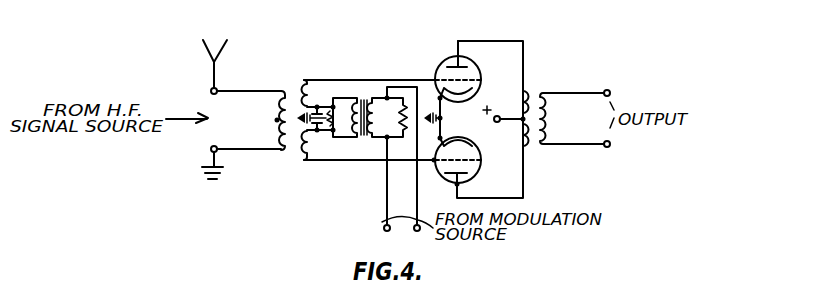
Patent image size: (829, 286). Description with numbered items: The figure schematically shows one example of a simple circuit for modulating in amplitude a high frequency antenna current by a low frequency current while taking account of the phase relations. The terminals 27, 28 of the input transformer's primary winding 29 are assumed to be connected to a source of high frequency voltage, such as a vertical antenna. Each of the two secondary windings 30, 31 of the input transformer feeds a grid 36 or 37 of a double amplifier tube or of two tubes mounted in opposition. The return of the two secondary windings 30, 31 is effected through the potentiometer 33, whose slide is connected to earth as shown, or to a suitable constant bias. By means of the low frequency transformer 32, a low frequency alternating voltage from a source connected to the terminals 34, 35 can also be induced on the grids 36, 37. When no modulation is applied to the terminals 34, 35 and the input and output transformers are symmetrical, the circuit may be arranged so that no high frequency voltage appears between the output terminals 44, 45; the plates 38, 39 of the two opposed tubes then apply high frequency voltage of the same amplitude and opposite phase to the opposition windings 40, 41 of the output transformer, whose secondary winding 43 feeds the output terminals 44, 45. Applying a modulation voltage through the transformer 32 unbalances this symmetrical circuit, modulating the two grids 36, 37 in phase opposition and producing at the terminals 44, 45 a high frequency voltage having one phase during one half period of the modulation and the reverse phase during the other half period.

The terminal 27 is at (234, 92).
The terminal 28 is at (234, 161).
The primary winding 29 is at (277, 120).
The secondary winding 30 is at (306, 81).
The secondary winding 31 is at (306, 161).
The low frequency transformer 32 is at (370, 100).
The potentiometer 33 is at (322, 132).
The terminal 34 is at (382, 238).
The terminal 35 is at (414, 238).
The grid 36 is at (487, 73).
The grid 37 is at (481, 161).
The plate 38 is at (452, 65).
The plate 39 is at (467, 177).
The opposition winding 40 is at (532, 147).
The opposition winding 41 is at (532, 92).
The output transformer secondary winding 43 is at (549, 120).
The output terminal 44 is at (620, 93).
The output terminal 45 is at (620, 145).